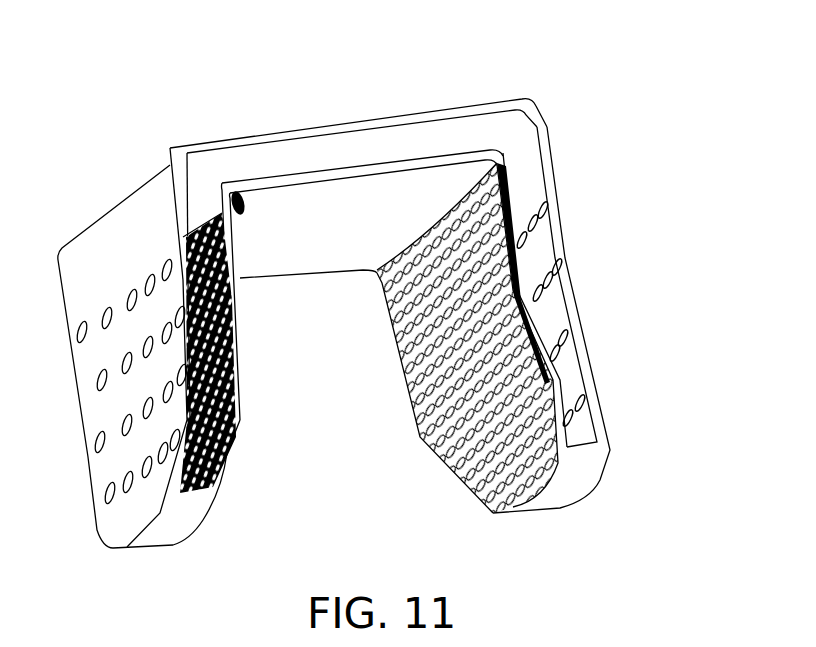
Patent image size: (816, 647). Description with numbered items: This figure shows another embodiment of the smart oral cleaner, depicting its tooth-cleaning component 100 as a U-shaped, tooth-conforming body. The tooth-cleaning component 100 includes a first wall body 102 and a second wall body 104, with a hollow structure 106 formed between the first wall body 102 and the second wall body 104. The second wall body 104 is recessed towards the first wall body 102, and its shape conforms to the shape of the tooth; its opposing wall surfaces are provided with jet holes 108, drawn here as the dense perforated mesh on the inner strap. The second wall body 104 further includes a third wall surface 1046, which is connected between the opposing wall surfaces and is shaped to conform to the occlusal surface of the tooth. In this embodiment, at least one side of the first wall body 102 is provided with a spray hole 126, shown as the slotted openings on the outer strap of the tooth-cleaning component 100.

The tooth-cleaning component 100 is at (566, 156).
The first wall body 102 is at (565, 303).
The second wall body 104 is at (233, 433).
The hollow structure 106 is at (587, 430).
The jet holes 108 is at (453, 468).
The spray hole 126 is at (100, 378).
The third wall surface 1046 is at (278, 242).